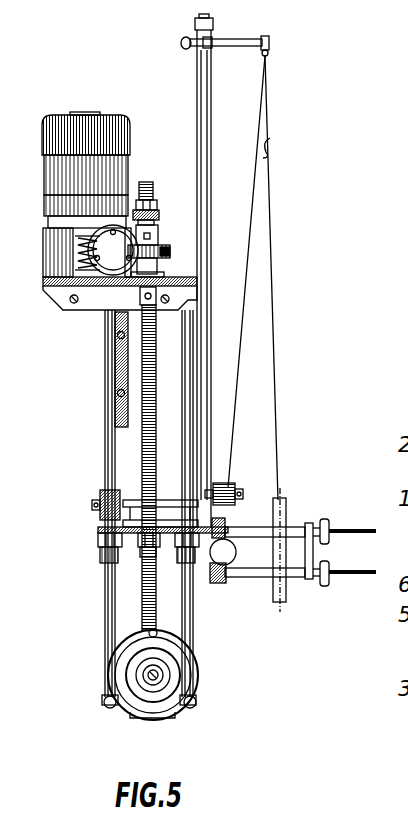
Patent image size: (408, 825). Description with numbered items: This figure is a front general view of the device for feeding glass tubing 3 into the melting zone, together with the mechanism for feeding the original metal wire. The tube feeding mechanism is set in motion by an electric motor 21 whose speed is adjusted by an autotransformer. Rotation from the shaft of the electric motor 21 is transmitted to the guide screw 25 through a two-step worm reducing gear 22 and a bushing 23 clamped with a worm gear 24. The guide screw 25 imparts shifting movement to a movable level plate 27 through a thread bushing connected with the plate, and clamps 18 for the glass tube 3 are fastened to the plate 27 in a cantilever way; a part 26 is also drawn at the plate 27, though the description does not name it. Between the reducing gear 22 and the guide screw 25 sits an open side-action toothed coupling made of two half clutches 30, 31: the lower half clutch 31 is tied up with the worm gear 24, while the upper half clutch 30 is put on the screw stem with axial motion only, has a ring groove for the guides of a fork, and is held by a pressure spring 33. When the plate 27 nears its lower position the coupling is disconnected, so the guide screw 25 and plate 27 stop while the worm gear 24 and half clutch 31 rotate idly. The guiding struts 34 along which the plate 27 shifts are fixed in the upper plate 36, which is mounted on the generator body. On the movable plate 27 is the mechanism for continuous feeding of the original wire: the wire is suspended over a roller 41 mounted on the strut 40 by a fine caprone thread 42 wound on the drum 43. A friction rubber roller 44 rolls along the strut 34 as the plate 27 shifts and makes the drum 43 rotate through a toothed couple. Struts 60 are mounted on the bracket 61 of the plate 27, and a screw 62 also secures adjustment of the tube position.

The electric motor 21 is at (60, 134).
The two-step worm reducing gear 22 is at (80, 240).
The upper plate 36 is at (50, 282).
The pressure spring 33 is at (146, 182).
The half clutch 30 is at (158, 210).
The half clutch 31 is at (160, 228).
The worm gear 24 is at (170, 251).
The bushing 23 is at (180, 278).
The strut 40 is at (197, 84).
The roller 41 is at (268, 40).
The caprone thread 42 is at (268, 96).
The guide screw 25 is at (143, 365).
The guiding struts 34 is at (108, 600).
The movable level plate 27 is at (100, 520).
The friction rubber roller 44 is at (100, 498).
The drum 43 is at (228, 493).
The nut 26 is at (140, 545).
The bracket 61 is at (224, 528).
The screw 62 is at (222, 556).
The struts 60 is at (275, 590).
The clamps 18 is at (328, 522).
The glass tubing 3 is at (286, 508).